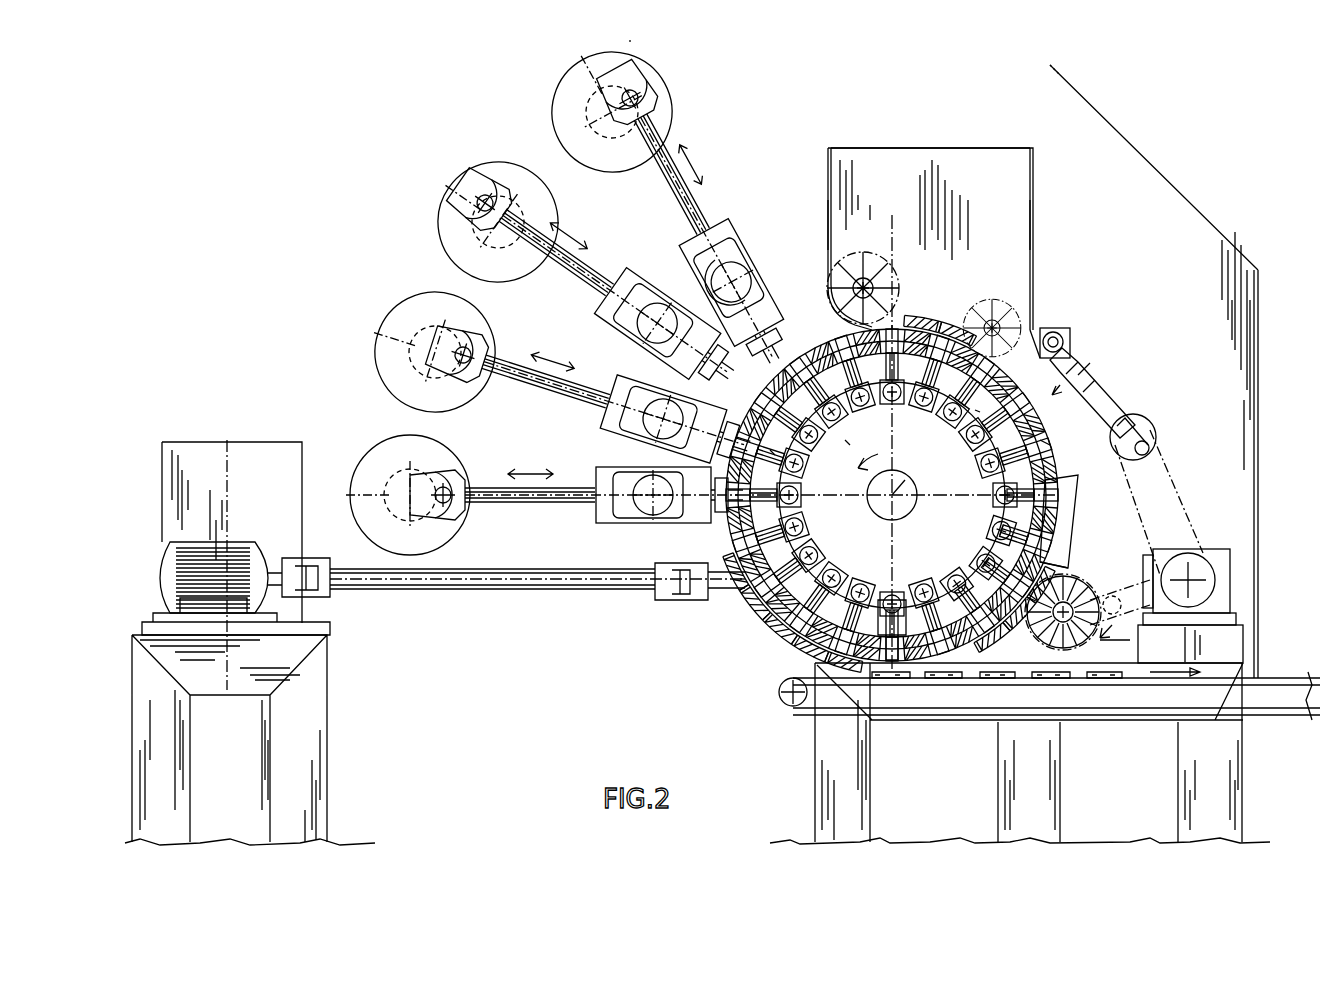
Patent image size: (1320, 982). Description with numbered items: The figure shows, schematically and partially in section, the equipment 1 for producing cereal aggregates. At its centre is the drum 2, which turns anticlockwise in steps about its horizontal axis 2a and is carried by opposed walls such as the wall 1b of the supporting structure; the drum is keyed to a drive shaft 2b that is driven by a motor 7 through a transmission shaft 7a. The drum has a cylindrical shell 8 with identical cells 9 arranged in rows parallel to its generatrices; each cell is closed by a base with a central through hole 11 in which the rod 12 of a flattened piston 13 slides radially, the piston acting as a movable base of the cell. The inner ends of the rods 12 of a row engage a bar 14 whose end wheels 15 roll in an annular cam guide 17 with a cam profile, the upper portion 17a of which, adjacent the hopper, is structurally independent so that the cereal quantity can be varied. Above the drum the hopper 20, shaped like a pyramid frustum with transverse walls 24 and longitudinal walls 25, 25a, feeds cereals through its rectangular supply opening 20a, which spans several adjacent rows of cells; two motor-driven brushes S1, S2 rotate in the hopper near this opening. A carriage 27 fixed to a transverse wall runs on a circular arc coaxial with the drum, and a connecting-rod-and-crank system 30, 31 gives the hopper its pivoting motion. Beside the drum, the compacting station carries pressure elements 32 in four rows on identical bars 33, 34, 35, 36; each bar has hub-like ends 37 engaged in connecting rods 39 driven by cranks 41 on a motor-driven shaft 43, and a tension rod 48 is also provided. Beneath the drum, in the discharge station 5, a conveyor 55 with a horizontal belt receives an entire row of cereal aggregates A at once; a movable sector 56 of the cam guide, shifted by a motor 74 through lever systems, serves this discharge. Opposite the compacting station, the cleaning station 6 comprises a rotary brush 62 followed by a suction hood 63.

The equipment 1 is at (703, 638).
The wall of the supporting structure 1b is at (1265, 308).
The drum 2 is at (1078, 360).
The axis of the drum 2a is at (874, 502).
The drive shaft 2b is at (907, 508).
The discharge station 5 is at (928, 695).
The cleaning and reconditioning station 6 is at (1150, 651).
The motor 7 is at (280, 545).
The transmission shaft 7a is at (500, 579).
The cylindrical shell 8 is at (804, 351).
The cell 9 is at (747, 397).
The central through hole 11 is at (1050, 435).
The rod 12 is at (772, 412).
The piston 13 is at (778, 411).
The bar 14 is at (952, 392).
The wheel 15 is at (827, 427).
The annular cam guide 17 is at (808, 464).
The upper portion of the cam guide 17a is at (887, 417).
The hopper 20 is at (966, 168).
The supply opening 20a is at (1045, 332).
The transverse wall 24 is at (865, 160).
The longitudinal wall 25 is at (828, 200).
The longitudinal wall 25a is at (1033, 208).
The carriage 27 is at (725, 141).
The connecting rod of the hopper drive 30 is at (1095, 371).
The crank of the hopper drive 31 is at (1133, 410).
The pressure element 32 is at (732, 516).
The pressure-element support bar 33 is at (728, 238).
The pressure-element support bar 34 is at (652, 286).
The pressure-element support bar 35 is at (632, 388).
The pressure-element support bar 36 is at (600, 466).
The end of the support bar 37 is at (747, 262).
The connecting rod 39 is at (532, 502).
The crank 41 is at (452, 478).
The motor-driven shaft 43 is at (397, 453).
The tension rod 48 is at (1066, 467).
The conveyor 55 is at (1183, 677).
The movable sector of the cam guide 56 is at (890, 592).
The rotary brush 62 is at (1093, 592).
The suction hood 63 is at (1079, 509).
The motor 74 is at (1201, 561).
The cereal aggregate A is at (783, 612).
The motor-driven brush S1 is at (888, 282).
The motor-driven brush S2 is at (975, 309).